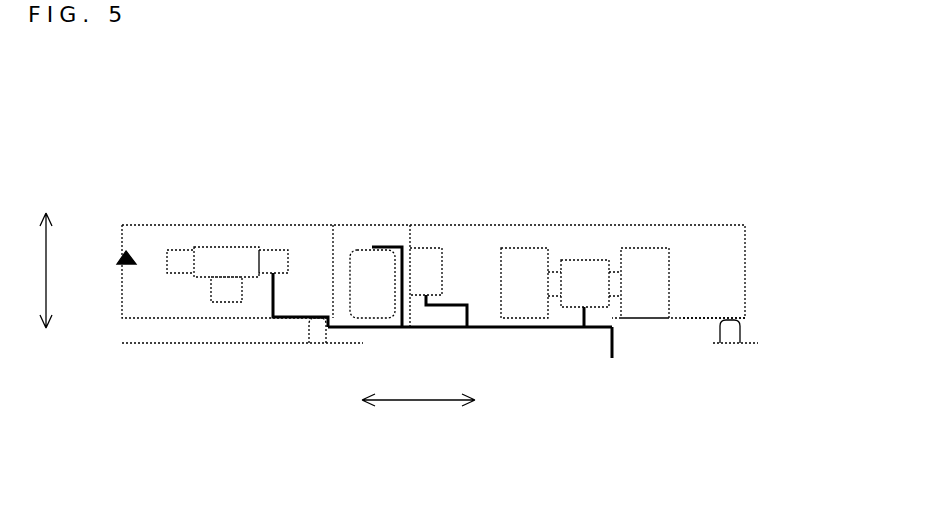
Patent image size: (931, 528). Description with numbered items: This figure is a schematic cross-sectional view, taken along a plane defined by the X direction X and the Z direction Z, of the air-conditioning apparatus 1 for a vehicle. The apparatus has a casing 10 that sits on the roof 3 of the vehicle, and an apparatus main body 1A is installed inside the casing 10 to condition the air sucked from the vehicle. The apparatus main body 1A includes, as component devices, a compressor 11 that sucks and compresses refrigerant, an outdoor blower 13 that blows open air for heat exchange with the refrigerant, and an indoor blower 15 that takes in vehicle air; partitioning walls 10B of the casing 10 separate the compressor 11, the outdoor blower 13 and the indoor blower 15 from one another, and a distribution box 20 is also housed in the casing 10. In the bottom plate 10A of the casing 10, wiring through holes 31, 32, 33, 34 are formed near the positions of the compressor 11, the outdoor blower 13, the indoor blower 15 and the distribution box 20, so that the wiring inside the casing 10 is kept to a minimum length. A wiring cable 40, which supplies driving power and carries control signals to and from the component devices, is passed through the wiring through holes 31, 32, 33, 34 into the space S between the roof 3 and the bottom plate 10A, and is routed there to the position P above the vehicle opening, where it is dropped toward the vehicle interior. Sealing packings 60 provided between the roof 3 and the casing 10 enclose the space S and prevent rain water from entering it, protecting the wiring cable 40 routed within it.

The air-conditioning apparatus for a vehicle 1 is at (770, 198).
The apparatus main body 1A is at (121, 257).
The roof 3 is at (132, 342).
The casing 10 is at (680, 225).
The bottom plate 10A is at (712, 318).
The partitioning walls 10B is at (333, 245).
The compressor 11 is at (363, 262).
The outdoor blower 13 is at (233, 263).
The indoor blower 15 is at (582, 263).
The distribution box 20 is at (428, 258).
The wiring through hole 31 is at (330, 313).
The wiring through hole 32 is at (399, 325).
The wiring through hole 33 is at (467, 313).
The wiring through hole 34 is at (581, 318).
The wiring cable 40 is at (446, 330).
The sealing packings 60 is at (313, 345).
The position P is at (614, 343).
The space S is at (714, 340).
The X direction X is at (415, 403).
The Z direction Z is at (44, 265).